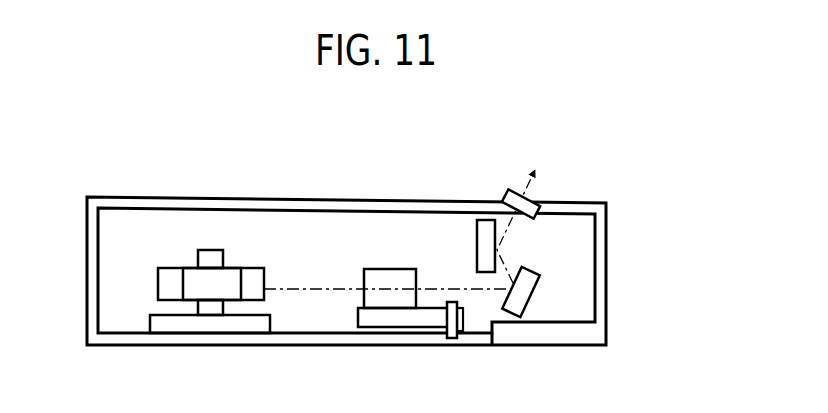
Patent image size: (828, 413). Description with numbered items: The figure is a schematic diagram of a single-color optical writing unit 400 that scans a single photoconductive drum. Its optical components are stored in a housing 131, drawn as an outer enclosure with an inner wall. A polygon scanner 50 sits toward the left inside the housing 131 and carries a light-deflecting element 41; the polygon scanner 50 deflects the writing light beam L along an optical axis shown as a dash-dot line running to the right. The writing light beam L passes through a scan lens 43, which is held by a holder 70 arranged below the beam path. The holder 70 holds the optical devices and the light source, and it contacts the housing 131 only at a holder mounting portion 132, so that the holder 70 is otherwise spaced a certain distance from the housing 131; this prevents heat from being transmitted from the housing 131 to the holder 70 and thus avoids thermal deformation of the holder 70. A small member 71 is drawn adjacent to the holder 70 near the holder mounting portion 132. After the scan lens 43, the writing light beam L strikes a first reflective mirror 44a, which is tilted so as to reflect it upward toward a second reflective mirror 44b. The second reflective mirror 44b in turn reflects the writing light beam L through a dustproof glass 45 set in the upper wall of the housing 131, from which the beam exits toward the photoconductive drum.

The single-color optical writing unit 400 is at (197, 176).
The housing 131 is at (608, 277).
The polygon scanner 50 is at (174, 261).
The light source 41 is at (230, 276).
The writing light beam L is at (315, 287).
The scan lens 43 is at (388, 277).
The holder 70 is at (398, 318).
The holder mounting portion 132 is at (463, 325).
The light detector 71 is at (452, 300).
The second reflective mirror 44b is at (485, 218).
The first reflective mirror 44a is at (534, 301).
The dustproof glass 45 is at (538, 194).